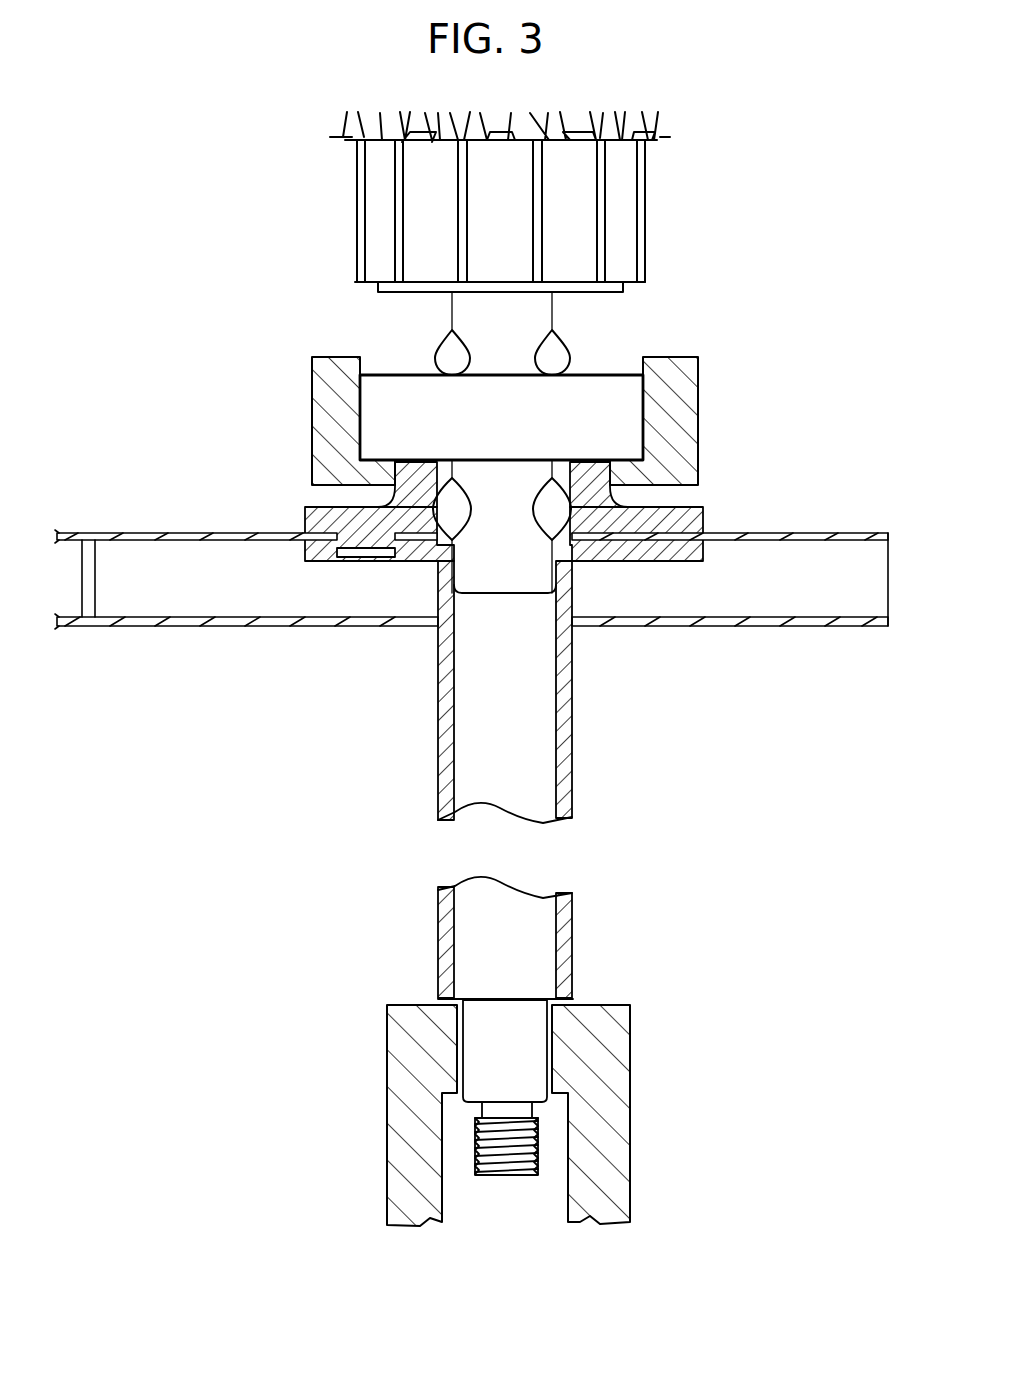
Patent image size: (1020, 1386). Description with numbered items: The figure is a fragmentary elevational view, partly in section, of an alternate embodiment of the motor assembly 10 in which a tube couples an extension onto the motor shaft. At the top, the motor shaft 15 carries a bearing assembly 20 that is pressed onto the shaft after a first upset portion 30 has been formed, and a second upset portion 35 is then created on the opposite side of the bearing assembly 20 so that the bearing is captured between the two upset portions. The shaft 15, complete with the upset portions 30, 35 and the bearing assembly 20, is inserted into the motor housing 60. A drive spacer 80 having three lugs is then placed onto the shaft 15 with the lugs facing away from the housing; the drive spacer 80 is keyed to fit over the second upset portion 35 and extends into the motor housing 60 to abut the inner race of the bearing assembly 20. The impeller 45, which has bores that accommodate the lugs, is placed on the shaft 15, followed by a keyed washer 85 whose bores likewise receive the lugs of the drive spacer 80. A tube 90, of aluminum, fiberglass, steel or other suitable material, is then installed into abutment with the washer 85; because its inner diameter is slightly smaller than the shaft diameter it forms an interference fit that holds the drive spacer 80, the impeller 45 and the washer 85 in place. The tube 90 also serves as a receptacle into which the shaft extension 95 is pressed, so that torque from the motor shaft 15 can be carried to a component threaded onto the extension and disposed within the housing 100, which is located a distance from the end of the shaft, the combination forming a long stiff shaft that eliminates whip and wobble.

The motor assembly 10 is at (362, 720).
The motor shaft 15 is at (472, 307).
The bearing assembly 20 is at (597, 375).
The first upset portion 30 is at (457, 348).
The second upset portion 35 is at (622, 503).
The impeller 45 is at (185, 627).
The motor housing 60 is at (683, 401).
The drive spacer 80 is at (367, 522).
The keyed washer 85 is at (635, 555).
The tube 90 is at (575, 723).
The shaft extension 95 is at (495, 1017).
The housing 100 is at (398, 1035).